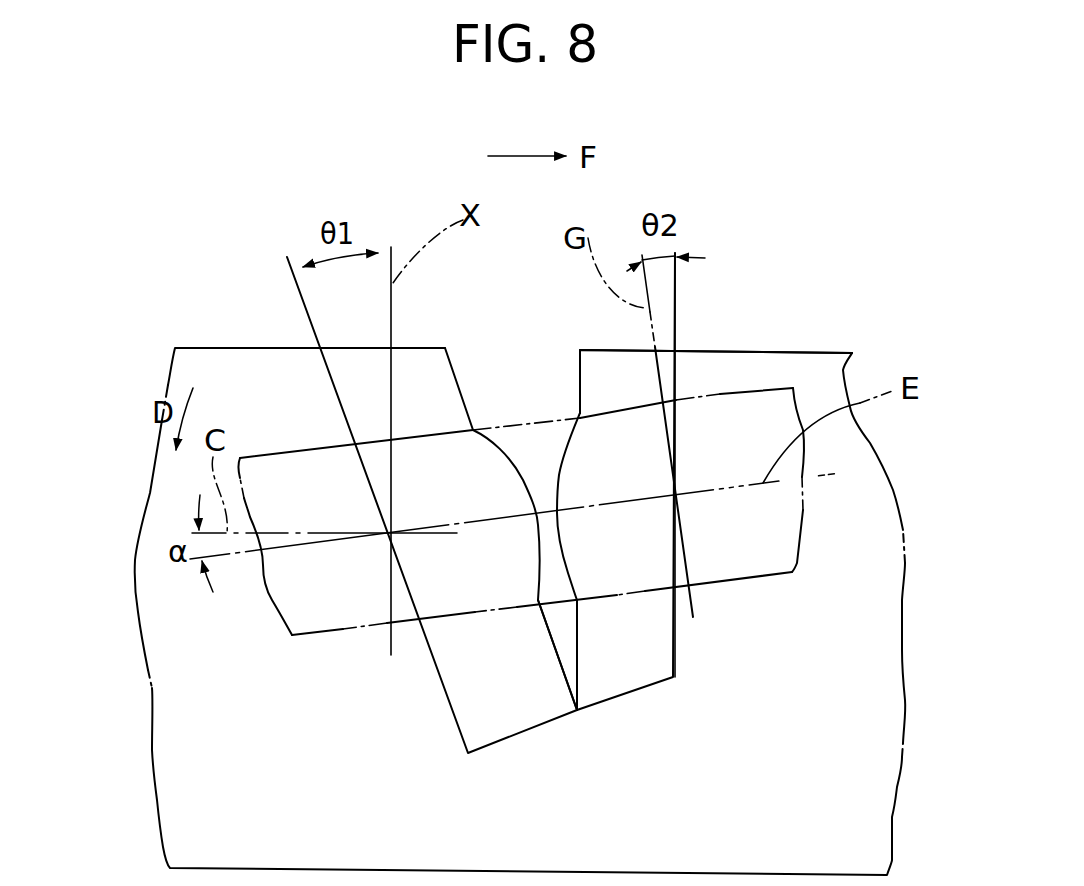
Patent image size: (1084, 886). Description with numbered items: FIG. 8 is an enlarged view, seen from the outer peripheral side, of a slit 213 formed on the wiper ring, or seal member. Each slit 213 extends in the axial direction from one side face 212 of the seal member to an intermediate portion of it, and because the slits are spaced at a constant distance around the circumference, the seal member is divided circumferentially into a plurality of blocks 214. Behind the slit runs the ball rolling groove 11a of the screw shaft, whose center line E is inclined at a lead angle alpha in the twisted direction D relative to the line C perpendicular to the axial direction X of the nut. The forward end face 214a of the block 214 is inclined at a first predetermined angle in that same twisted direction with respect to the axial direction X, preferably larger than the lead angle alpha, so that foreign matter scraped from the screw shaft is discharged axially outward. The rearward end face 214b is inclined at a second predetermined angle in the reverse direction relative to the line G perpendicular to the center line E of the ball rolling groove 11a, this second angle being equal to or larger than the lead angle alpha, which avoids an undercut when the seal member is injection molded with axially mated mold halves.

The block 214 is at (217, 367).
The forward end face 214a is at (463, 688).
The rearward end face 214b is at (658, 652).
The slit 213 is at (518, 387).
The side face 212 is at (773, 350).
The ball rolling groove 11a is at (727, 573).